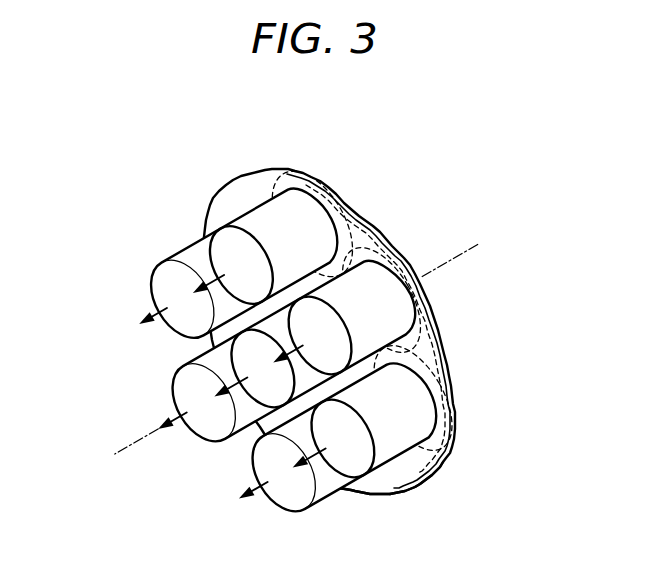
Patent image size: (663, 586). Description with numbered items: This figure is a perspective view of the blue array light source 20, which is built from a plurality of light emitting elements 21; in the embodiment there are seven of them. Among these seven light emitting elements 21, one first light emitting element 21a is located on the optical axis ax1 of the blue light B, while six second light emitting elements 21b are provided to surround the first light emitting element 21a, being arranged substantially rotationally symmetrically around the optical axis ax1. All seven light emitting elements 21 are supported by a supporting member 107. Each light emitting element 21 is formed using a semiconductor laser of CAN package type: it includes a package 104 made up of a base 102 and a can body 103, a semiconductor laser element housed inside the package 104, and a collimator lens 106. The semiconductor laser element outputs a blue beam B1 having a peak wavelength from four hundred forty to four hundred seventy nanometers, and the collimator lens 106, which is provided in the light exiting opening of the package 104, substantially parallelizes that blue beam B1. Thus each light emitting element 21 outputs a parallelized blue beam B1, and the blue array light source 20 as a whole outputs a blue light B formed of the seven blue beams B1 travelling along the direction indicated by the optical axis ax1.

The blue array light source 20 is at (407, 333).
The light emitting element 21 is at (259, 308).
The first light emitting element 21a is at (277, 325).
The second light emitting element 21b is at (248, 216).
The blue light B is at (121, 308).
The blue beam B1 is at (205, 275).
The optical axis ax1 is at (122, 455).
The base 102 is at (425, 291).
The can body 103 is at (385, 282).
The package 104 is at (407, 331).
The collimator lens 106 is at (352, 470).
The supporting member 107 is at (417, 467).